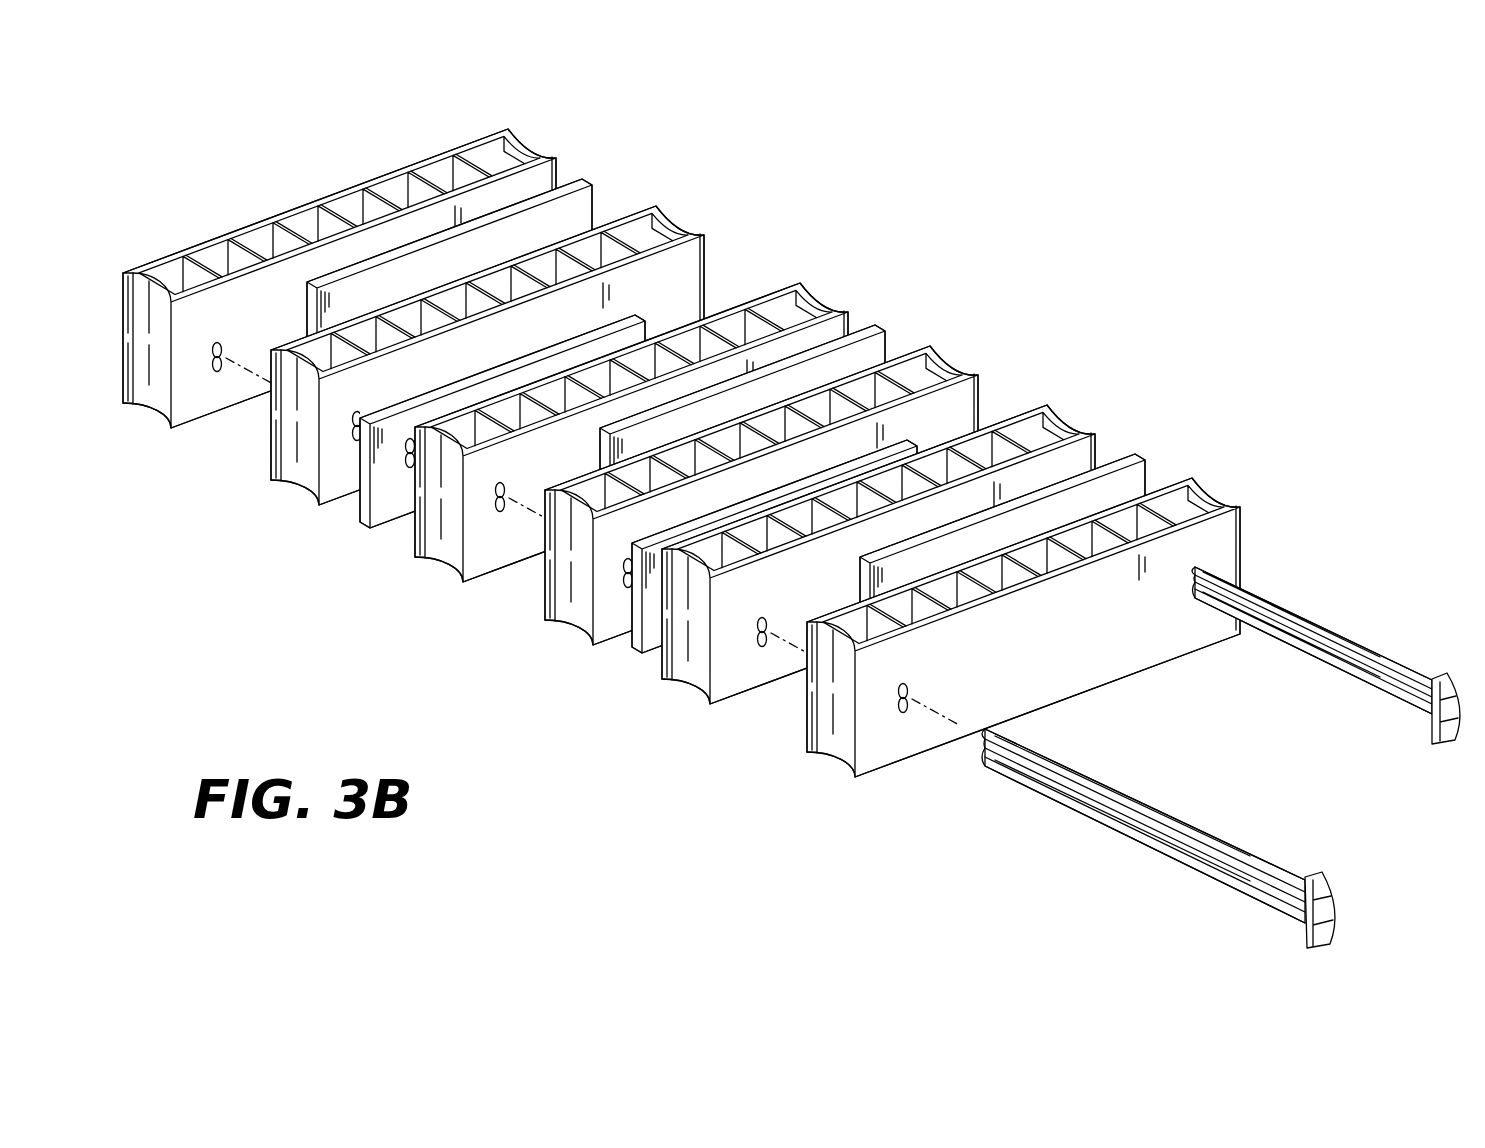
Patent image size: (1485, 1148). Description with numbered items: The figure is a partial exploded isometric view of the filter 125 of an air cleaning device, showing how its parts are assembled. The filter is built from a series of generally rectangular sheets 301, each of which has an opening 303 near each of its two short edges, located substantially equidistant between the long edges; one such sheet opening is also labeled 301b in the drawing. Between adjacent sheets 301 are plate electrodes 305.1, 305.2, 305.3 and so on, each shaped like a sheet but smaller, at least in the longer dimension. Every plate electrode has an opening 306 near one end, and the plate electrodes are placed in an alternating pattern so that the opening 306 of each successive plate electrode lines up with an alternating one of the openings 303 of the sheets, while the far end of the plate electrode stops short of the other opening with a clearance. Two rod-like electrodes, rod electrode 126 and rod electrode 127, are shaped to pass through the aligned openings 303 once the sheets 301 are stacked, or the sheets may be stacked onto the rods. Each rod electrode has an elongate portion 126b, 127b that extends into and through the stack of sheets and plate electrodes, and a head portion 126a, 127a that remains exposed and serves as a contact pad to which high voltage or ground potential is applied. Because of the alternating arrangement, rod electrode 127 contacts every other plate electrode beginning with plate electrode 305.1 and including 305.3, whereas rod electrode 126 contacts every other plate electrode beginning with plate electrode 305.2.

The filter 125 is at (985, 283).
The sheet 301 is at (549, 138).
The keyhole slot 301b is at (217, 368).
The opening 303 is at (904, 713).
The plate electrode 305.1 is at (1140, 454).
The plate electrode 305.2 is at (628, 663).
The plate electrode 305.3 is at (881, 329).
The opening 306 is at (407, 445).
The rod electrode 126 is at (1040, 827).
The head portion 126a is at (1317, 877).
The elongate portion 126b is at (1150, 817).
The rod electrode 127 is at (1286, 660).
The head portion 127a is at (1428, 728).
The elongate portion 127b is at (1388, 667).